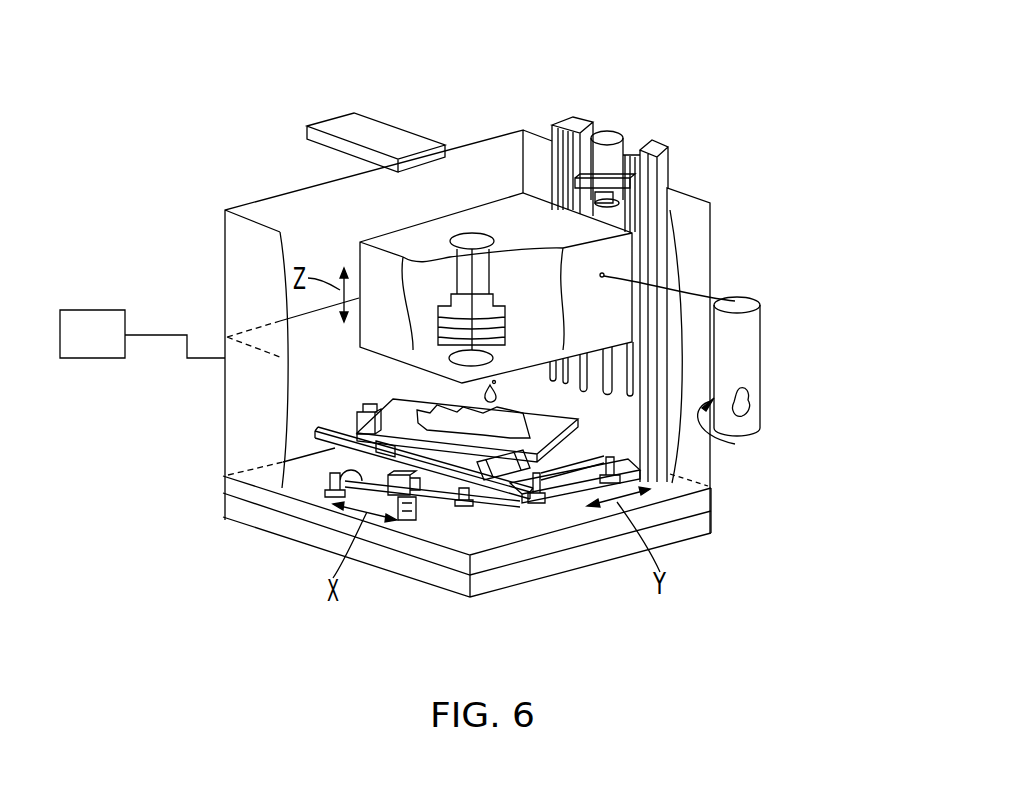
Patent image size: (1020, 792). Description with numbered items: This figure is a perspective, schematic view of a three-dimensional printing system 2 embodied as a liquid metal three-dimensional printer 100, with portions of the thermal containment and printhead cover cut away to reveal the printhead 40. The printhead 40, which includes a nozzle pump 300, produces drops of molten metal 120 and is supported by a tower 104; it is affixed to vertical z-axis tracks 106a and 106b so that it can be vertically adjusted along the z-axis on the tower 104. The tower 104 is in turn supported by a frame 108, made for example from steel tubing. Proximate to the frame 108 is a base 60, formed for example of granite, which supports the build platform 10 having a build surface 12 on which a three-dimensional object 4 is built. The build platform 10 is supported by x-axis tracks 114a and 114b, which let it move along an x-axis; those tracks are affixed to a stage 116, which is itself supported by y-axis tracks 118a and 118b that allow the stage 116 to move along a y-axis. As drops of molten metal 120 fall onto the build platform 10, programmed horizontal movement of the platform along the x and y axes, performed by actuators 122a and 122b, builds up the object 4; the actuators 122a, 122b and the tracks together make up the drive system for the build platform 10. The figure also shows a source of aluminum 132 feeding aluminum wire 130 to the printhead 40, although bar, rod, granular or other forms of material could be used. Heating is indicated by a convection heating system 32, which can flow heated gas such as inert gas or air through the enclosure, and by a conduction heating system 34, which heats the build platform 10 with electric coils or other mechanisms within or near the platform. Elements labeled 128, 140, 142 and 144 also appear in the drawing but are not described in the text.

The three-dimensional printing system 2 is at (153, 57).
The liquid metal 3D printer 100 is at (143, 182).
The convection heating system 32 is at (90, 310).
The tower 104 is at (684, 202).
The frame 108 is at (232, 512).
The base 60 is at (292, 476).
The printhead 40 is at (395, 242).
The source of aluminum 132 is at (343, 122).
The nozzle pump 300 is at (440, 320).
The aluminum wire 130 is at (473, 243).
The nozzle 128 is at (450, 355).
The drops of molten metal 120 is at (478, 395).
The vertical z-axis track 106a is at (552, 140).
The vertical z-axis track 106b is at (627, 202).
The material container 144 is at (737, 300).
The container opening 142 is at (755, 403).
The rotation arrow 140 is at (725, 440).
The build platform 10 is at (390, 400).
The three-dimensional object 4 is at (503, 426).
The build surface 12 is at (575, 426).
The stage 116 is at (316, 432).
The actuator 122a is at (358, 420).
The conduction heating system 34 is at (383, 446).
The y-axis track 118a is at (330, 492).
The y-axis track 118b is at (455, 502).
The actuator 122b is at (410, 517).
The x-axis track 114a is at (505, 494).
The x-axis track 114b is at (708, 527).